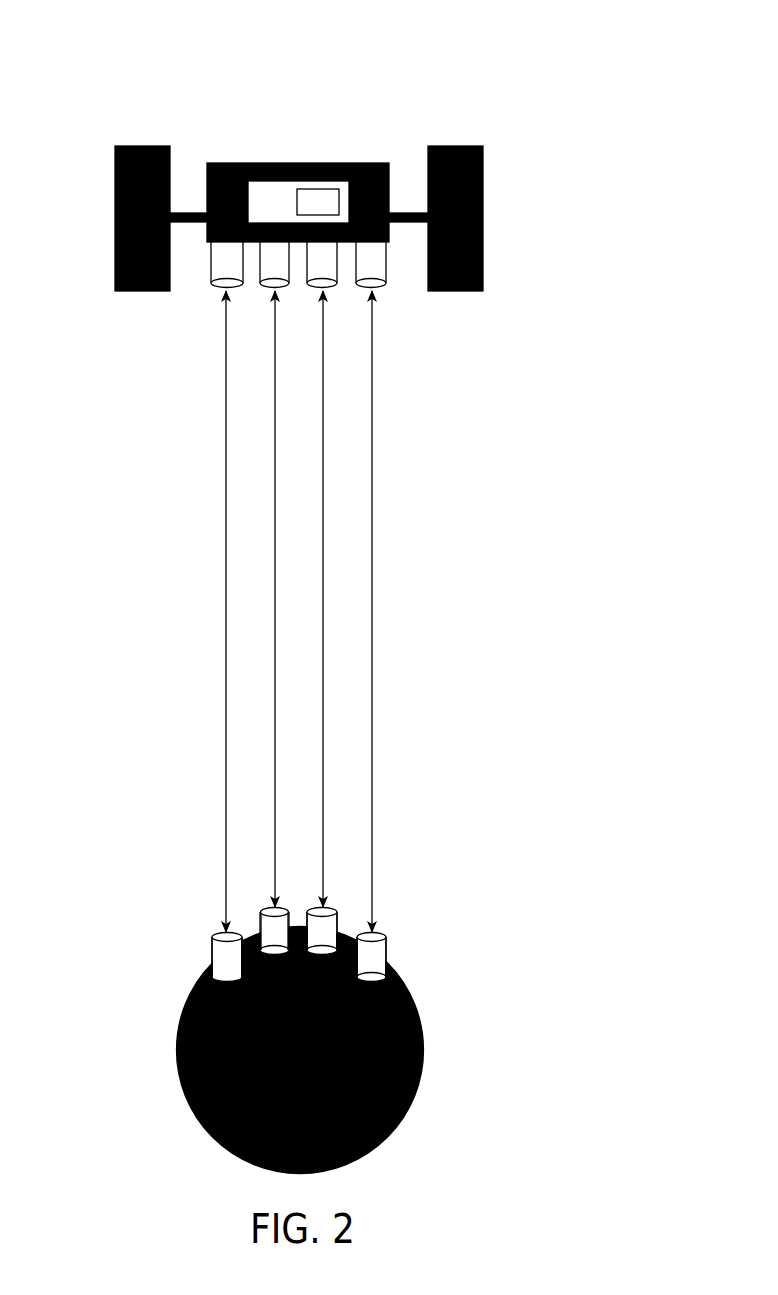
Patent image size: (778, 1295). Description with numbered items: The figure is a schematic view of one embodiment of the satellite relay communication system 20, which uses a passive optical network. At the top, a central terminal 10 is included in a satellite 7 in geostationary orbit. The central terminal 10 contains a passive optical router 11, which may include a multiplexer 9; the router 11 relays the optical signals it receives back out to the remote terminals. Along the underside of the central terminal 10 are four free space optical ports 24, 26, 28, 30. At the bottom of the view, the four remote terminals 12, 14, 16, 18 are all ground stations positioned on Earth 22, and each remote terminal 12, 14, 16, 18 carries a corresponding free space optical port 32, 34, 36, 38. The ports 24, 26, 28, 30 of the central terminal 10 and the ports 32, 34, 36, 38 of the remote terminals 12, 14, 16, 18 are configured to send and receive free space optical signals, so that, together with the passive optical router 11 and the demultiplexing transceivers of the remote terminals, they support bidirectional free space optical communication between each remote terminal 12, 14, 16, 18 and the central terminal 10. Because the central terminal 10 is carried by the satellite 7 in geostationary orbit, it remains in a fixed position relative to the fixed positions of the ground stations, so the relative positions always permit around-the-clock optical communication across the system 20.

The satellite relay communication system 20 is at (459, 63).
The satellite 7 is at (98, 89).
The central terminal 10 is at (374, 145).
The passive optical router 11 is at (257, 187).
The multiplexer 9 is at (315, 187).
The free space optical port 24 is at (213, 286).
The free space optical port 26 is at (283, 288).
The free space optical port 28 is at (331, 288).
The free space optical port 30 is at (380, 288).
The remote terminal 12 is at (208, 955).
The remote terminal 14 is at (247, 923).
The remote terminal 16 is at (341, 922).
The remote terminal 18 is at (390, 955).
The free space optical port 32 is at (212, 928).
The free space optical port 34 is at (268, 893).
The free space optical port 36 is at (315, 901).
The free space optical port 38 is at (382, 930).
The Earth 22 is at (423, 1035).